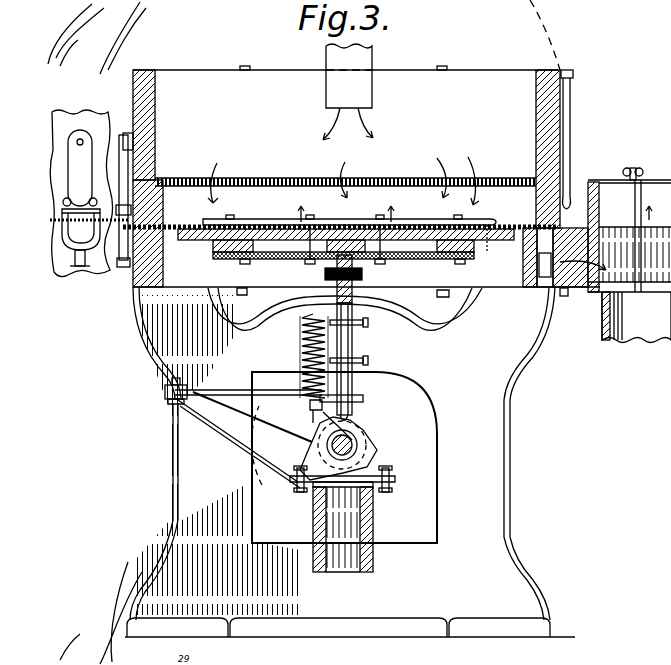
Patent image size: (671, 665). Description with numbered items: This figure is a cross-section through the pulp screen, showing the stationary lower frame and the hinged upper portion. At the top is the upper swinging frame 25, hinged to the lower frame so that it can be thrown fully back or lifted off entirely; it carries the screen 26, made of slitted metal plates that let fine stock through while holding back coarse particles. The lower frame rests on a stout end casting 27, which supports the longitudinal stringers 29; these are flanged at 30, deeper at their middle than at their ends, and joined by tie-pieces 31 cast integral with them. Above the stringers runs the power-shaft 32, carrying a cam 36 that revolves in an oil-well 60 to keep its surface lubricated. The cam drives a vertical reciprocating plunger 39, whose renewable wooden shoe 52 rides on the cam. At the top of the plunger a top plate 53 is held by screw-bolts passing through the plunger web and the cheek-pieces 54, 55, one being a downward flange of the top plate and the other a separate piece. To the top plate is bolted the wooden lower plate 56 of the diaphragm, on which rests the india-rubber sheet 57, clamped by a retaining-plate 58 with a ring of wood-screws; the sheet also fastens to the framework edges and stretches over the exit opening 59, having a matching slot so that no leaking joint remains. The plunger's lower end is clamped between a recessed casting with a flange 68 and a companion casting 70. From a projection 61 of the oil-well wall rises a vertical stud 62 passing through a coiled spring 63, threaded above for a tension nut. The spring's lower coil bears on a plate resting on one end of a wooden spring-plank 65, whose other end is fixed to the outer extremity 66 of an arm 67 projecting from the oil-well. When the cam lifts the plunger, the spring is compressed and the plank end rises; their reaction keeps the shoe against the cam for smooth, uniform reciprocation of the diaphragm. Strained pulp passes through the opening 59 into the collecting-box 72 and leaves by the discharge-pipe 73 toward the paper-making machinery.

The upper swinging frame 25 is at (93, 123).
The screen 26 is at (379, 181).
The end casting 27 is at (362, 462).
The longitudinal stringers 29 is at (315, 517).
The flange 30 is at (293, 488).
The tie-pieces 31 is at (352, 553).
The power-shaft 32 is at (357, 440).
The cam 36 is at (368, 421).
The reciprocating plunger 39 is at (318, 296).
The wooden shoe 52 is at (350, 408).
The top plate 53 is at (243, 260).
The cheek-piece 54 is at (362, 283).
The cheek-piece 55 is at (326, 272).
The lower plate of the diaphragm 56 is at (215, 243).
The india-rubber sheet 57 is at (178, 225).
The retaining-plate 58 is at (232, 227).
The opening 59 is at (537, 258).
The oil-well 60 is at (372, 458).
The projection 61 is at (252, 430).
The vertical stud 62 is at (275, 445).
The coiled spring 63 is at (307, 360).
The spring-plank 65 is at (256, 395).
The outer extremity of the arm 66 is at (190, 390).
The arm 67 is at (237, 443).
The flange 68 is at (312, 400).
The companion casting 70 is at (352, 348).
The collecting-box 72 is at (629, 230).
The discharge-pipe 73 is at (650, 335).